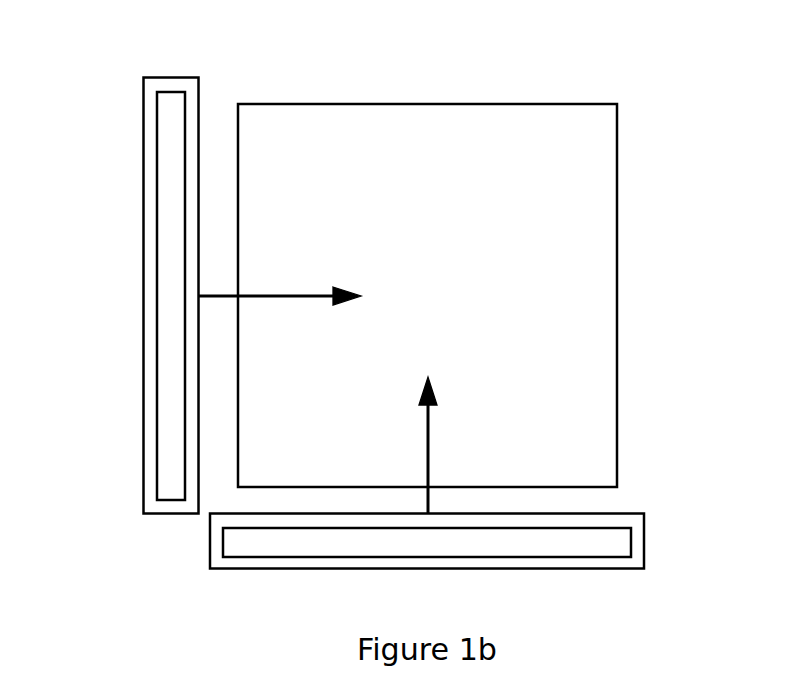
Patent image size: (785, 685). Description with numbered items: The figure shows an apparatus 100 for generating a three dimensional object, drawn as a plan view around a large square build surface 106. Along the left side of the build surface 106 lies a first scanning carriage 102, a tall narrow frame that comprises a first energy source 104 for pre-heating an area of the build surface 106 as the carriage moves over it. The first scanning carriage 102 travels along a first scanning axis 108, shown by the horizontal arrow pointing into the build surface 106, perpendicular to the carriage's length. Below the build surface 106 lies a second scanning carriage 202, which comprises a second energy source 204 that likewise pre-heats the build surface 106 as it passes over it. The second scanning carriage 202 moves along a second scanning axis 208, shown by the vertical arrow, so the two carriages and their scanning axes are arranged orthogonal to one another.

The apparatus 100 is at (741, 32).
The first scanning carriage 102 is at (143, 110).
The first energy source 104 is at (157, 238).
The build surface 106 is at (587, 241).
The first scanning axis 108 is at (306, 292).
The second scanning carriage 202 is at (644, 517).
The second energy source 204 is at (609, 541).
The second scanning axis 208 is at (430, 449).